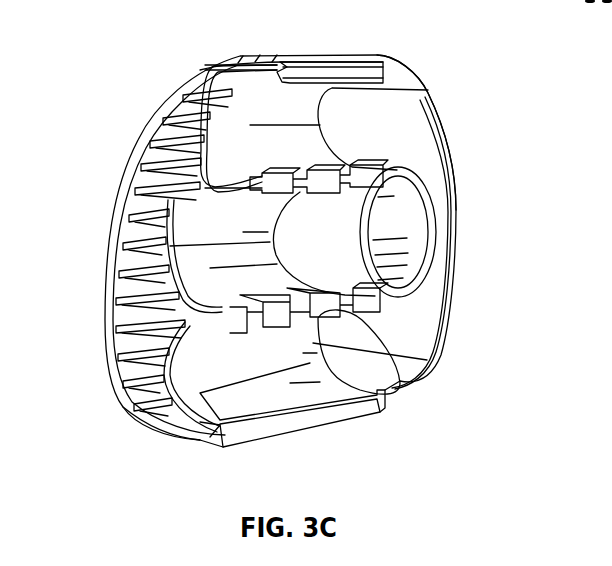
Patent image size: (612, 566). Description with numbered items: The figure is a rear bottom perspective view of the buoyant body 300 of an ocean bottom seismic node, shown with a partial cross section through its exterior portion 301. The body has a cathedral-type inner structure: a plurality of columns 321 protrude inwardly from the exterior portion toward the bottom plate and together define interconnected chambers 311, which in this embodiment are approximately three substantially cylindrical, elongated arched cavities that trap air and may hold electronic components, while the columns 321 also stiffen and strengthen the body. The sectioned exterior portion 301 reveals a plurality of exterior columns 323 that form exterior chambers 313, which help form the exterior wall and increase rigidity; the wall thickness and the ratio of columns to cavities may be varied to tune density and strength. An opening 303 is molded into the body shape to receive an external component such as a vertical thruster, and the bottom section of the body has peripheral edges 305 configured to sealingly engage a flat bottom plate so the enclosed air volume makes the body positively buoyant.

The buoyant body 300 is at (185, 26).
The exterior portion 301 is at (143, 150).
The opening 303 is at (413, 250).
The peripheral edges 305 is at (440, 105).
The chambers 311 is at (283, 367).
The exterior chambers 313 is at (155, 410).
The columns 321 is at (400, 340).
The exterior columns 323 is at (130, 314).